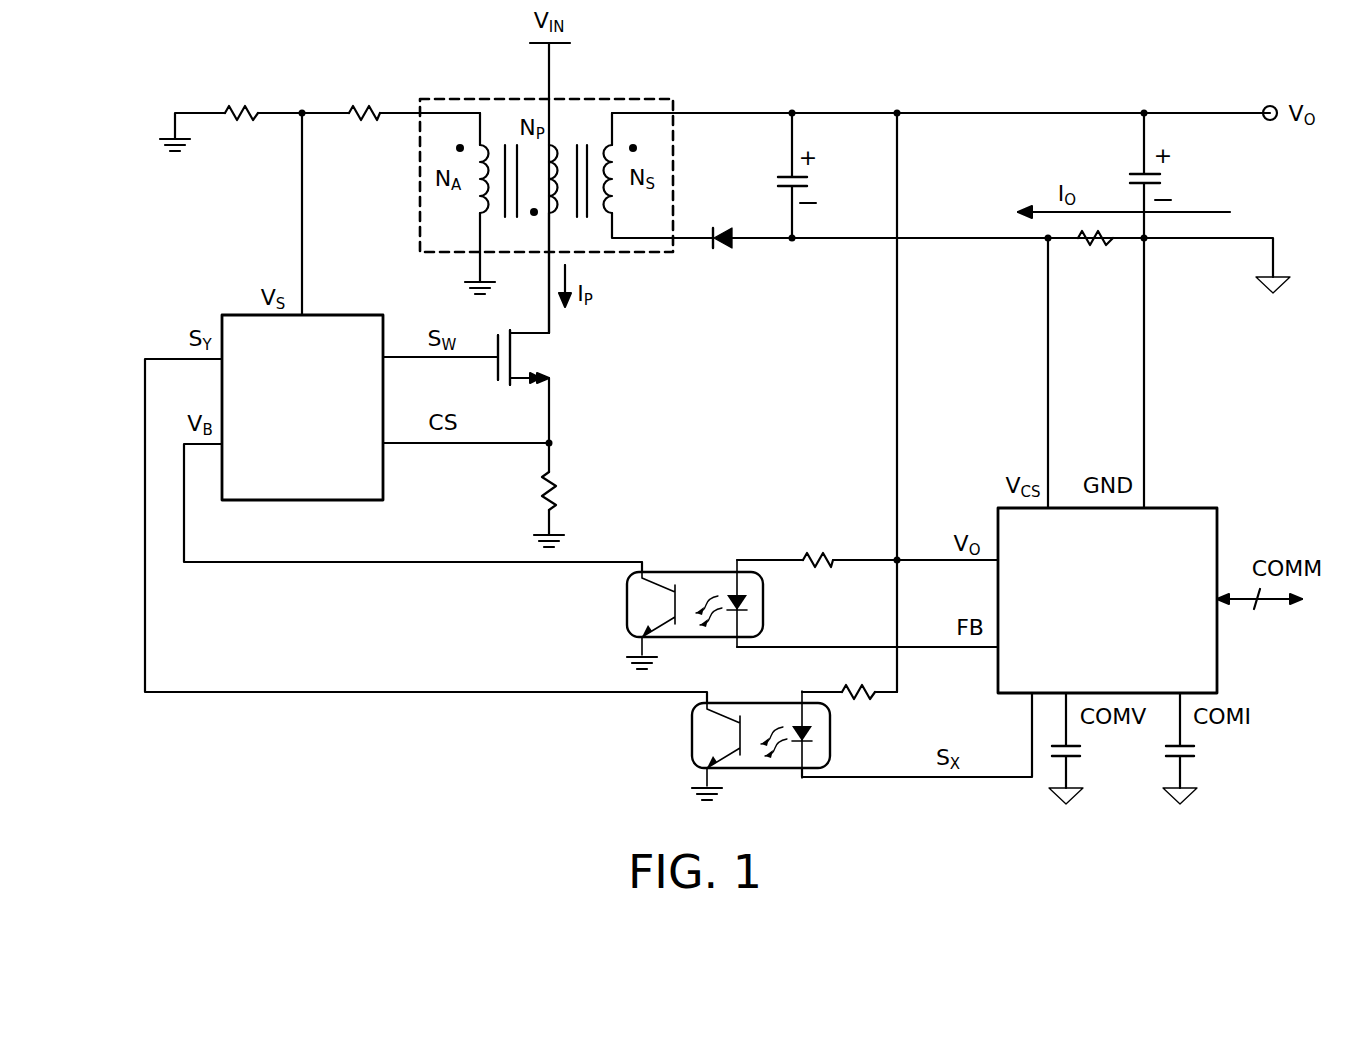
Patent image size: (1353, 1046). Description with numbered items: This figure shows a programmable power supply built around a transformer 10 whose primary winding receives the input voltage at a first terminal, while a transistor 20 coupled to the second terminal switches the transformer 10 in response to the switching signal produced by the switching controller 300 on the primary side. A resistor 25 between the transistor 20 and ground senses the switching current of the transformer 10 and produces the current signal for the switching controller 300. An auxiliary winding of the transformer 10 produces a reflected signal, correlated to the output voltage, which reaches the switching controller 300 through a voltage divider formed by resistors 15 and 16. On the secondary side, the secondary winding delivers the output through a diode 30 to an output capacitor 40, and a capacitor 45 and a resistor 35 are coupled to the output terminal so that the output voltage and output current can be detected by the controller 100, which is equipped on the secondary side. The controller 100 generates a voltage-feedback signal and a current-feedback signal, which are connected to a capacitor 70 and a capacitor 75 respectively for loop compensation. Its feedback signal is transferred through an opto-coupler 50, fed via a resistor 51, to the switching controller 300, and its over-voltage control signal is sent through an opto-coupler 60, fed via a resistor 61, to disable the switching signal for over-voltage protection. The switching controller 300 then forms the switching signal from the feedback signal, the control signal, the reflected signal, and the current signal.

The transformer 10 is at (546, 159).
The resistor 15 is at (364, 99).
The resistor 16 is at (241, 99).
The transistor 20 is at (547, 357).
The resistor 25 is at (569, 491).
The rectifier diode 30 is at (722, 224).
The resistor 35 is at (1095, 254).
The output capacitor 40 is at (774, 180).
The capacitor 45 is at (1127, 178).
The opto-coupler 50 is at (695, 599).
The resistor 51 is at (818, 545).
The opto-coupler 60 is at (761, 731).
The resistor 61 is at (858, 677).
The capacitor 70 is at (1084, 752).
The capacitor 75 is at (1199, 752).
The controller 100 is at (1107, 584).
The switching controller 300 is at (302, 392).